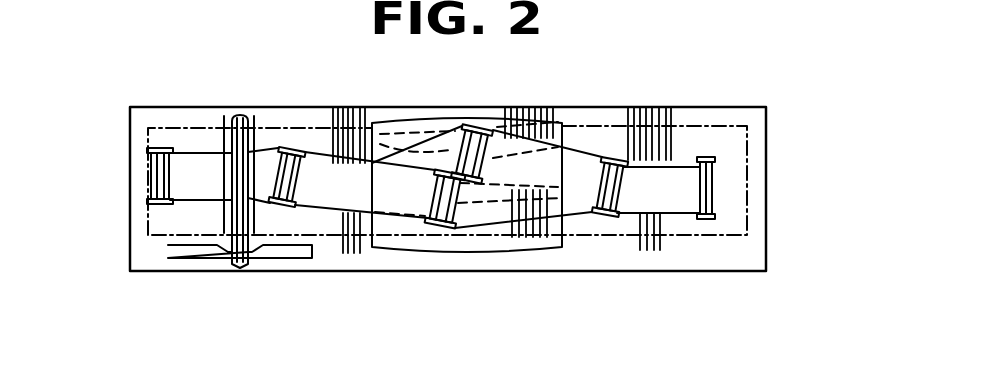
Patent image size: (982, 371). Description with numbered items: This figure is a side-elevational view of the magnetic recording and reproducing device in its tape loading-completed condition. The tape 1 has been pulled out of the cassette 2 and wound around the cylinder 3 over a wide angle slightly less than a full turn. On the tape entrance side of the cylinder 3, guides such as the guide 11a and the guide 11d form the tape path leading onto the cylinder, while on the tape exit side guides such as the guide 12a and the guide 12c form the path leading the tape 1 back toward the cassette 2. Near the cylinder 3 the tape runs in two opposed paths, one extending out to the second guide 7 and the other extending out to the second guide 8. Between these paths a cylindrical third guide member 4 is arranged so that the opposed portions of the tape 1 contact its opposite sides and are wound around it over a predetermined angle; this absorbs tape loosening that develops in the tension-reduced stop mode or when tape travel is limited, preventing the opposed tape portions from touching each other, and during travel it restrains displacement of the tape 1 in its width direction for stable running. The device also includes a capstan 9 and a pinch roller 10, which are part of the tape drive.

The tape 1 is at (676, 205).
The cassette 2 is at (743, 198).
The cylinder 3 is at (545, 238).
The third guide member 4 is at (404, 148).
The second guide 7 is at (480, 186).
The second guide 8 is at (433, 228).
The capstan 9 is at (240, 266).
The pinch roller 10 is at (222, 178).
The guide 11a is at (705, 207).
The guide 11d is at (607, 217).
The guide 12a is at (289, 207).
The guide 12c is at (157, 180).